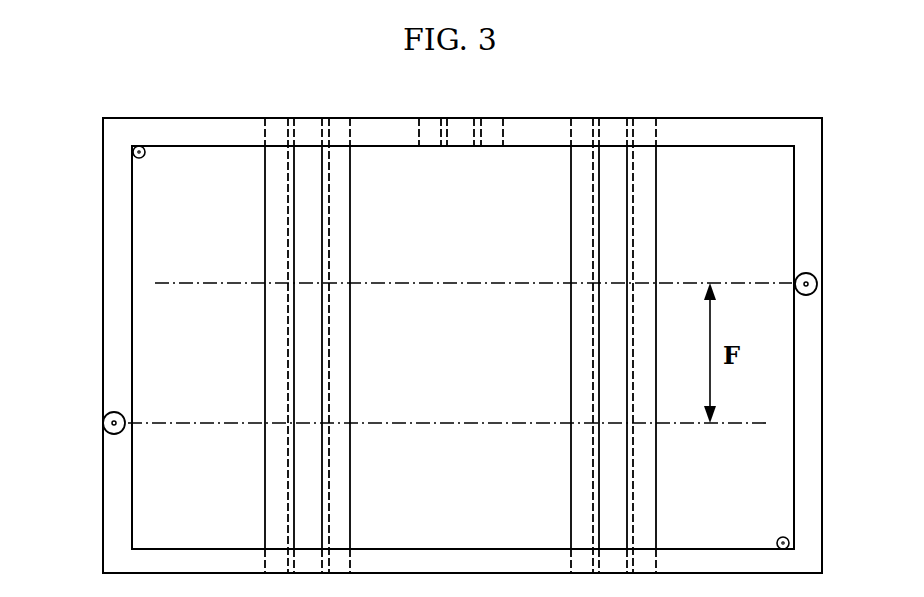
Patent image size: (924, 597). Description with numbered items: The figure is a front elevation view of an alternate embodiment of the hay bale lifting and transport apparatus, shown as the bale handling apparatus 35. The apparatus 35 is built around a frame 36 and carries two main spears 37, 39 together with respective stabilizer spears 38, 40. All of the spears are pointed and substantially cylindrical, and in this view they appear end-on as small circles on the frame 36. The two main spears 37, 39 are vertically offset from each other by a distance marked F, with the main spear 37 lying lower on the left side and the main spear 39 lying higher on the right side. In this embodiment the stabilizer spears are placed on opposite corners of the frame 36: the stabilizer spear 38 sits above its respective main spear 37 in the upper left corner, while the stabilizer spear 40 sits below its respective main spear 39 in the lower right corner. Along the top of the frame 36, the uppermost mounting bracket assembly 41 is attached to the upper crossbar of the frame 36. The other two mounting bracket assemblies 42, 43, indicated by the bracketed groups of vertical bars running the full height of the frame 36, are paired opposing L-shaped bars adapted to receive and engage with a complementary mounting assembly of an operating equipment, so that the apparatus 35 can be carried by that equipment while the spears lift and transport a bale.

The bale handling apparatus 35 is at (176, 102).
The frame 36 is at (737, 118).
The main spear 37 is at (103, 423).
The stabilizer spear 38 is at (133, 151).
The main spear 39 is at (817, 284).
The stabilizer spear 40 is at (796, 544).
The uppermost mounting bracket assembly 41 is at (510, 153).
The mounting bracket assembly 42 is at (357, 107).
The mounting bracket assembly 43 is at (658, 107).